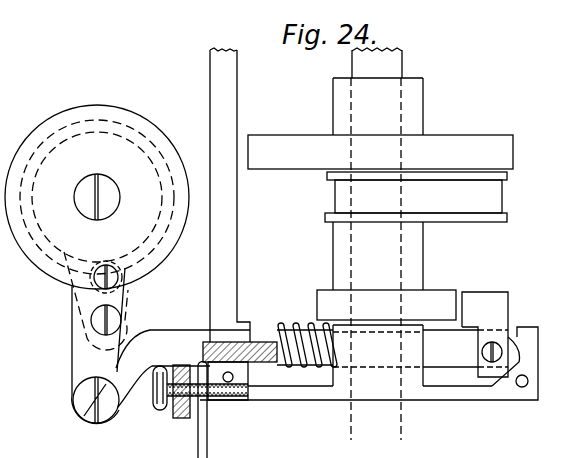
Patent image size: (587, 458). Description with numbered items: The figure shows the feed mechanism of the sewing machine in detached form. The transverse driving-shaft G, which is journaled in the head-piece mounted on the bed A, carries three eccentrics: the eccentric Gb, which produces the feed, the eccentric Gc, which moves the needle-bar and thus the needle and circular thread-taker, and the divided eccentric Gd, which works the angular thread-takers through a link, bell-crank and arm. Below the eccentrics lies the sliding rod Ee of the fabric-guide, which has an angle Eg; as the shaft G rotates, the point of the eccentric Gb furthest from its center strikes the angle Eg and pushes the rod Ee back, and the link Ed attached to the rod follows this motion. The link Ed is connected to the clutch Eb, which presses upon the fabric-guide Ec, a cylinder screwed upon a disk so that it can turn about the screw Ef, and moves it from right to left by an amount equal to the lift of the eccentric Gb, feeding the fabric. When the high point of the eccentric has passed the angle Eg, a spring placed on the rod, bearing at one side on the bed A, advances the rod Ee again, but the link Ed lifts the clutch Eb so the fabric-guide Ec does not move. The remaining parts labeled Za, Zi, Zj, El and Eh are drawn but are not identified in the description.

The base or bed A is at (369, 226).
The driving-shaft G is at (376, 244).
The eccentric Gd is at (380, 152).
The eccentric Gc is at (416, 197).
The eccentric Gb is at (386, 338).
The angle of the sliding rod Eg is at (485, 334).
The sliding rod for the fabric-guide Ee is at (312, 368).
The spring Za is at (307, 345).
The nut Zi is at (207, 402).
The slot Zj is at (175, 410).
The fabric-guide Ec is at (97, 197).
The clutch Eb is at (97, 235).
The axle El is at (97, 197).
The link Ed is at (98, 346).
The pin Eh is at (116, 298).
The screw Ef is at (96, 400).